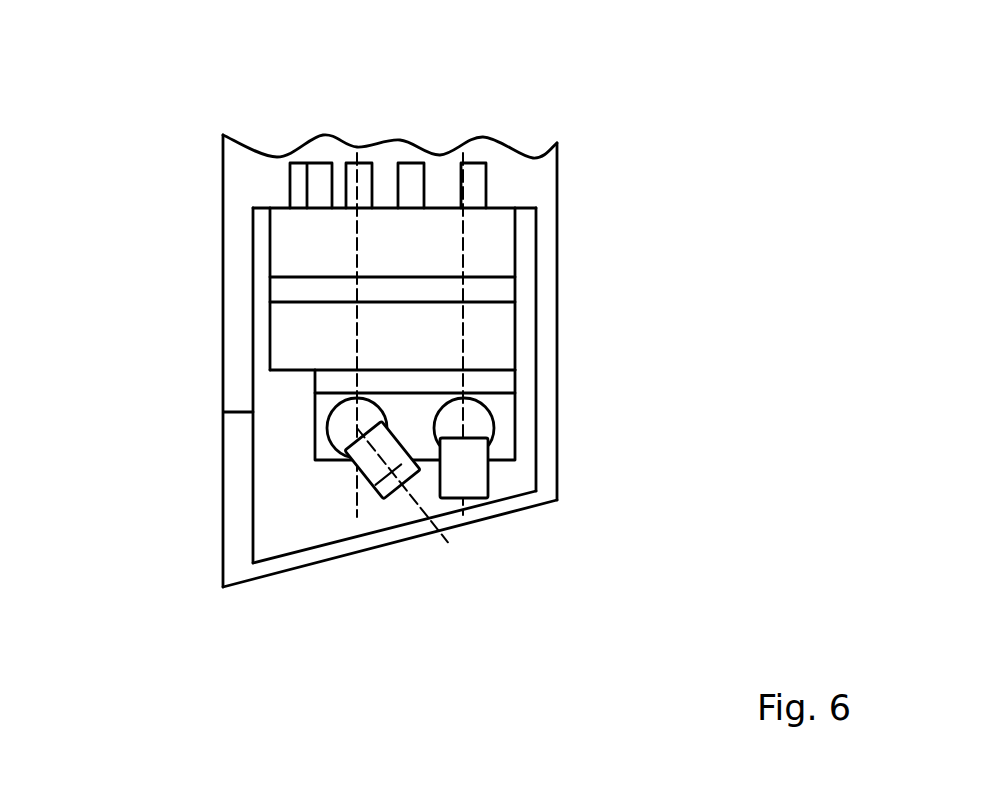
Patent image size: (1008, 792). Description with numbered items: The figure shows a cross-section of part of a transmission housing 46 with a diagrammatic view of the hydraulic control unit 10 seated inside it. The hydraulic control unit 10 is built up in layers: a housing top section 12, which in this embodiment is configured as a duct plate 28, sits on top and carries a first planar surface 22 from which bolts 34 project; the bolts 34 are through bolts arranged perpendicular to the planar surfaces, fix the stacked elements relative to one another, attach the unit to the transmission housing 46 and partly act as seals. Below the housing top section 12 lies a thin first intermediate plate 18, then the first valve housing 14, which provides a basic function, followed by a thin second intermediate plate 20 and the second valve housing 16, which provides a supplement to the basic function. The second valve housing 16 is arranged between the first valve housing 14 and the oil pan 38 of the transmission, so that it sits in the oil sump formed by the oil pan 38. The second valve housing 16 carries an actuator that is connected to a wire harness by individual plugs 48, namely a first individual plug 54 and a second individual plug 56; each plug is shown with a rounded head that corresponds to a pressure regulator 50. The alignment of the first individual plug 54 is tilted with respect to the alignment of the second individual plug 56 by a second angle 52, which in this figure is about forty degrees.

The hydraulic control unit 10 is at (528, 122).
The housing top section 12 is at (502, 335).
The first valve housing 14 is at (302, 338).
The second valve housing 16 is at (502, 436).
The first intermediate plate 18 is at (321, 292).
The second intermediate plate 20 is at (485, 378).
The first planar surface 22 is at (385, 208).
The duct plate 28 is at (492, 247).
The bolt 34 is at (410, 182).
The oil pan 38 is at (302, 558).
The transmission housing 46 is at (527, 183).
The individual plug 48 is at (537, 554).
The pressure regulator 50 is at (347, 425).
The second angle 52 is at (368, 484).
The first individual plug 54 is at (403, 467).
The second individual plug 56 is at (477, 483).